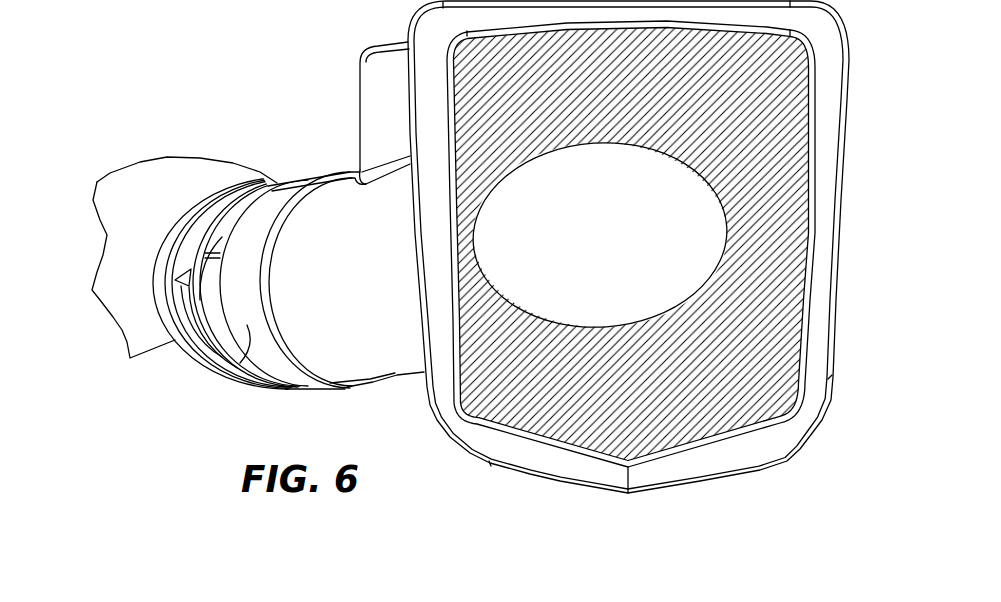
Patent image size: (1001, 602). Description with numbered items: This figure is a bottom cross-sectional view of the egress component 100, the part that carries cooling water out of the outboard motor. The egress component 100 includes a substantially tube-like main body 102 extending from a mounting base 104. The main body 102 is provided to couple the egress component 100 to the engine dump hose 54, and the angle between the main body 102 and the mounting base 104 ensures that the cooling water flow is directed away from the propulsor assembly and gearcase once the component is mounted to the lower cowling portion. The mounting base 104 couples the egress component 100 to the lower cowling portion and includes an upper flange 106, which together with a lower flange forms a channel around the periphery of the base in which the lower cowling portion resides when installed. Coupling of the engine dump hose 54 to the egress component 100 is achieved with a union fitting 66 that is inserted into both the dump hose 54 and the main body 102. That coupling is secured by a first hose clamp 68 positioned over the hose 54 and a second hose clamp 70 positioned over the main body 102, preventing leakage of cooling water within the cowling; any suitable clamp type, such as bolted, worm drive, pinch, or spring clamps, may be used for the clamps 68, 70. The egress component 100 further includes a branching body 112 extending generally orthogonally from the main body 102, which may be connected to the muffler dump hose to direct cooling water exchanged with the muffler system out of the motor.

The egress component 100 is at (240, 66).
The main body 102 is at (397, 376).
The mounting base 104 is at (790, 466).
The upper flange 106 is at (852, 79).
The branching body 112 is at (357, 117).
The engine dump hose 54 is at (127, 282).
The union fitting 66 is at (180, 305).
The first hose clamp 68 is at (214, 193).
The second hose clamp 70 is at (237, 367).